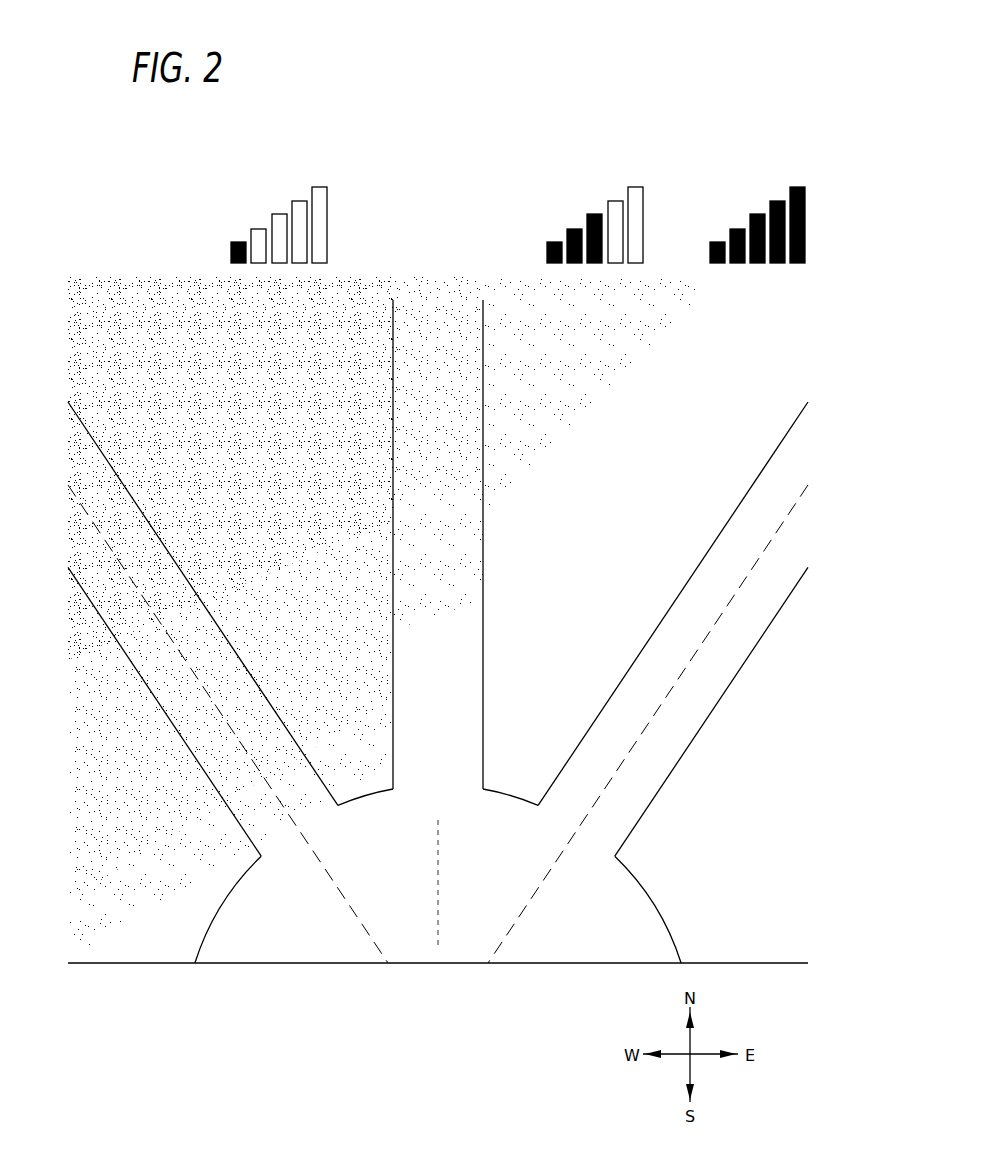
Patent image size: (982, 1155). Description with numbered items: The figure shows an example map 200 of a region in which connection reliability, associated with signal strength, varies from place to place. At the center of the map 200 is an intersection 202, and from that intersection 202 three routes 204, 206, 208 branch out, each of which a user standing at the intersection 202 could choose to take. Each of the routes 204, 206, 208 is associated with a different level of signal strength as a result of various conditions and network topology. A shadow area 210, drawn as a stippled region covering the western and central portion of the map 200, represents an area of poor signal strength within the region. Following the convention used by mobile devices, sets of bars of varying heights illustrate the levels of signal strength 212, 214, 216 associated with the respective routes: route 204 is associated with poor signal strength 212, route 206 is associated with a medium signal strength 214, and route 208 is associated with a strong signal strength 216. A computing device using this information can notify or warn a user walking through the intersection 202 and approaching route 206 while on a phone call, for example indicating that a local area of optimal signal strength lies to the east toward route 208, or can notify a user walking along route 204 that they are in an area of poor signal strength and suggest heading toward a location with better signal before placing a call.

The map 200 is at (546, 69).
The intersection 202 is at (413, 952).
The route 204 is at (283, 807).
The route 206 is at (438, 650).
The route 208 is at (635, 743).
The shadow area 210 is at (140, 313).
The poor signal strength 212 is at (280, 174).
The medium signal strength 214 is at (595, 174).
The strong signal strength 216 is at (757, 174).